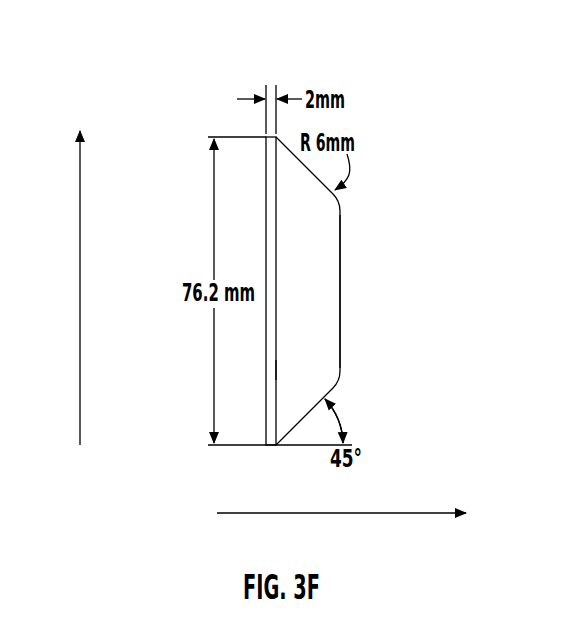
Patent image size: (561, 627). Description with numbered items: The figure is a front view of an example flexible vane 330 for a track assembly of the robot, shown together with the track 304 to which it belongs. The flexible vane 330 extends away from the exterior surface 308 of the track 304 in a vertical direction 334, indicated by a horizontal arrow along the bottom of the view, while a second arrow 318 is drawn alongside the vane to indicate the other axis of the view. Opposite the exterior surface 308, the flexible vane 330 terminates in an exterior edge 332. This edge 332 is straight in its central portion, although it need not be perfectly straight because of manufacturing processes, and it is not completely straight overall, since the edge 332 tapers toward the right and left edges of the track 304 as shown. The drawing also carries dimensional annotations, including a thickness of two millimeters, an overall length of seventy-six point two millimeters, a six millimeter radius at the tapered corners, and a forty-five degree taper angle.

The track 304 is at (265, 447).
The exterior surface 308 is at (277, 370).
The vertical axis 318 is at (80, 350).
The flexible vane 330 is at (323, 306).
The exterior edge 332 is at (340, 292).
The vertical direction 334 is at (375, 514).